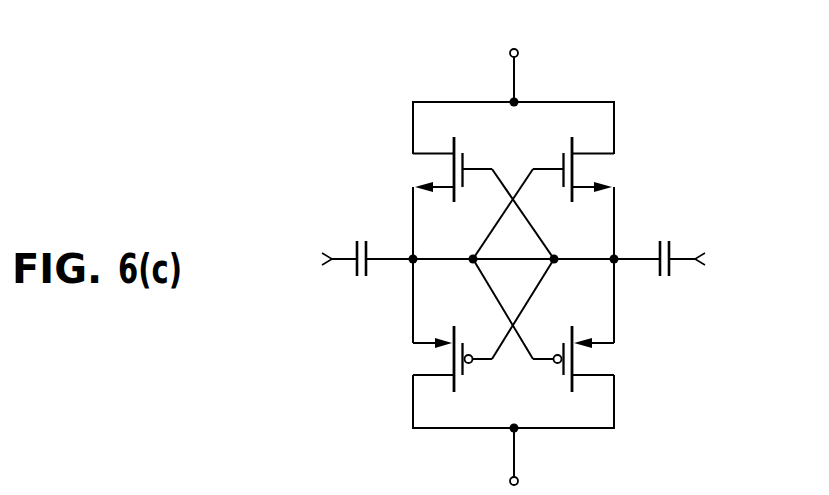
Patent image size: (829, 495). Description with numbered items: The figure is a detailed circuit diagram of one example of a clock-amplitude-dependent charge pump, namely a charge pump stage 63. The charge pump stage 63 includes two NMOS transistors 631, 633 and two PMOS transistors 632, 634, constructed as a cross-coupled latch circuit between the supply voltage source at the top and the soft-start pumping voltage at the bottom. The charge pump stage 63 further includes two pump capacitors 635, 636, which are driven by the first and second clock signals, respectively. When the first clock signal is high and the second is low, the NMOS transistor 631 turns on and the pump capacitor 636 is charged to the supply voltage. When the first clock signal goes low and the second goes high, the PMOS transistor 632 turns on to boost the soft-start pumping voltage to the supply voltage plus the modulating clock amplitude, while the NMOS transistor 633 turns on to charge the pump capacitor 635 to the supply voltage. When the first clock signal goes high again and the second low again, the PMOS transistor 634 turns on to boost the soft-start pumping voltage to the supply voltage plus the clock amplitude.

The charge pump stage 63 is at (649, 63).
The NMOS transistor 631 is at (617, 172).
The PMOS transistor 632 is at (615, 366).
The NMOS transistor 633 is at (407, 168).
The PMOS transistor 634 is at (412, 360).
The pump capacitor 635 is at (363, 279).
The pump capacitor 636 is at (665, 279).